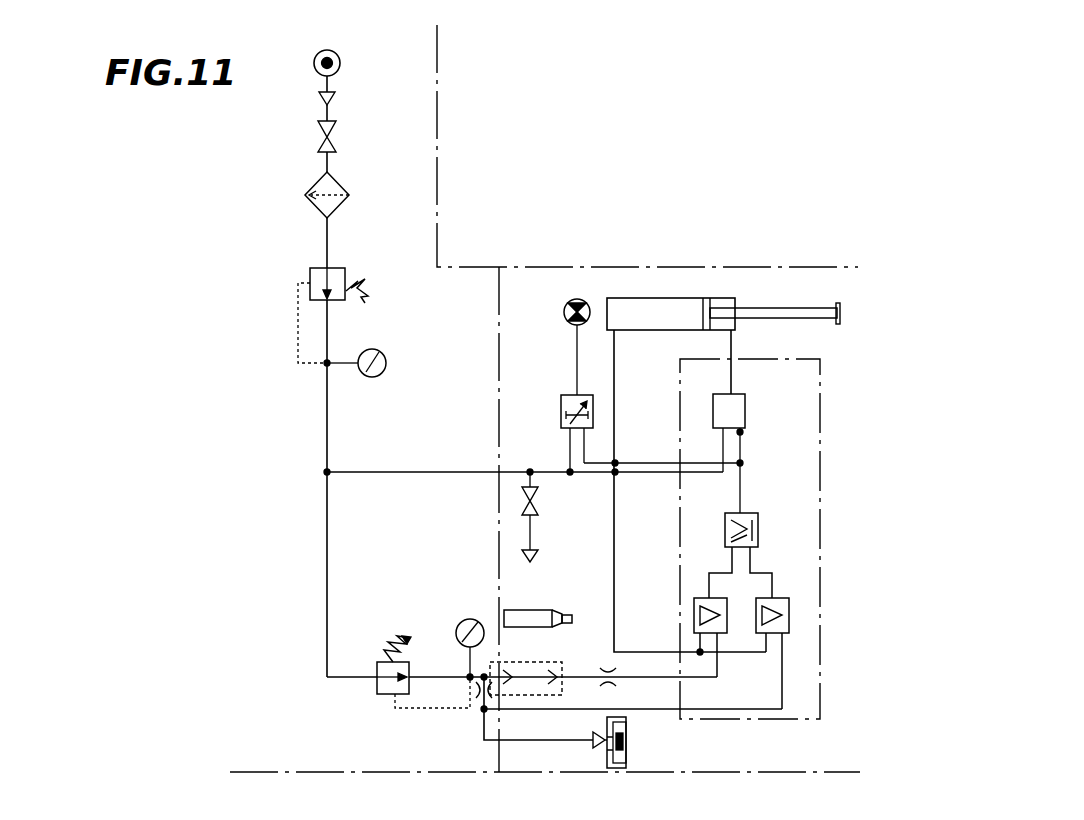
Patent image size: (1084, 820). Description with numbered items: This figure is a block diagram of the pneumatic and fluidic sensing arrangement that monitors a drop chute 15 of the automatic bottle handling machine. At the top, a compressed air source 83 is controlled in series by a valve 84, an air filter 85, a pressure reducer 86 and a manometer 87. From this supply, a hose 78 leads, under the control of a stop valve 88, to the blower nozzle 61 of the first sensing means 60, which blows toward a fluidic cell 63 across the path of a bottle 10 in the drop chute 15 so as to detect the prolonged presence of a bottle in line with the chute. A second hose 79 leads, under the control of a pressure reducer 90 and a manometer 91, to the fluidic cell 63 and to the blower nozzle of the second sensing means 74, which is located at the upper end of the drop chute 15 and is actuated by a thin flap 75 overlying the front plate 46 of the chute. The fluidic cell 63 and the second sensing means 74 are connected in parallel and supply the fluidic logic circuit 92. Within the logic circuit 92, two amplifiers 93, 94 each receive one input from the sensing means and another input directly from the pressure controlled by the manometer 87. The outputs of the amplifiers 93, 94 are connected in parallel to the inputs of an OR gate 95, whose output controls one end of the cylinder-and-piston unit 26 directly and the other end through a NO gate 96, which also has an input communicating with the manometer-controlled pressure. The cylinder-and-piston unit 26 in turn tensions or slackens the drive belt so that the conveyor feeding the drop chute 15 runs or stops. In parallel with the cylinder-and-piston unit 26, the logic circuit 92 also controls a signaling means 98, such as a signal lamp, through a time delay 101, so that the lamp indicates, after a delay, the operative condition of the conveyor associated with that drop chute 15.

The compressed air source 83 is at (341, 64).
The valve 84 is at (331, 137).
The air filter 85 is at (310, 200).
The pressure reducer 86 is at (310, 276).
The manometer 87 is at (378, 357).
The hose 78 is at (406, 472).
The stop valve 88 is at (535, 500).
The blower nozzle 61 is at (535, 556).
The bottle 10 is at (520, 608).
The first sensing means 60 is at (600, 608).
The manometer 91 is at (462, 625).
The hose 79 is at (348, 677).
The pressure reducer 90 is at (377, 694).
The fluidic cell 63 is at (562, 662).
The cylinder-and-piston unit 26 is at (657, 292).
The signaling means 98 is at (564, 312).
The time delay 101 is at (561, 398).
The NO gate 96 is at (745, 410).
The OR gate 95 is at (758, 520).
The amplifier 93 is at (700, 598).
The amplifier 94 is at (785, 598).
The flap 75 is at (628, 741).
The second sensing means 74 is at (597, 748).
The front plate 46 is at (616, 768).
The fluidic logic circuit 92 is at (803, 722).
The drop chute 15 is at (522, 810).